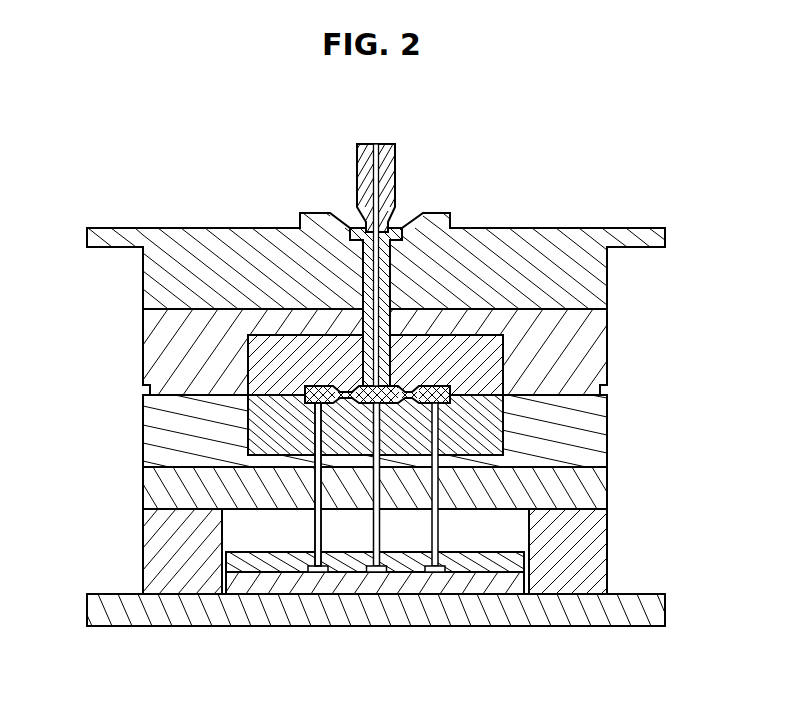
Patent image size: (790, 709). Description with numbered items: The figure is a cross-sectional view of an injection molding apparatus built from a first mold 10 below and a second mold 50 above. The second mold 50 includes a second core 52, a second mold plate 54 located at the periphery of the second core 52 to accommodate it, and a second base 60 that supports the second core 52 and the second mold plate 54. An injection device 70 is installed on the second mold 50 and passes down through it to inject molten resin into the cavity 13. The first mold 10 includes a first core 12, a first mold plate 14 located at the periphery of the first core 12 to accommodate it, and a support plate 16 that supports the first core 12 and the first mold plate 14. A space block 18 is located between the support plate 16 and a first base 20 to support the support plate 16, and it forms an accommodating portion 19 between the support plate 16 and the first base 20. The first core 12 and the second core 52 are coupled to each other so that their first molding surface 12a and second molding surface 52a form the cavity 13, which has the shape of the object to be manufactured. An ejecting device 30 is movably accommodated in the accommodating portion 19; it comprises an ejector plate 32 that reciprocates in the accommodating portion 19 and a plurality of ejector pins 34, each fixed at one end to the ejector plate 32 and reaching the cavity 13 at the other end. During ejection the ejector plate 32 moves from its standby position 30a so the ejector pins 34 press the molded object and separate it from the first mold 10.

The first mold 10 is at (374, 494).
The first core 12 is at (590, 472).
The first molding surface 12a is at (495, 441).
The cavity 13 is at (305, 388).
The first mold plate 14 is at (590, 455).
The support plate 16 is at (600, 500).
The space block 18 is at (600, 575).
The accommodating portion 19 is at (504, 515).
The first base 20 is at (568, 626).
The ejecting device 30 is at (394, 556).
The standby position 30a is at (318, 484).
The ejector plate 32 is at (452, 578).
The ejector pin 34 is at (411, 532).
The second mold 50 is at (371, 313).
The second core 52 is at (495, 358).
The second molding surface 52a is at (493, 379).
The second mold plate 54 is at (607, 328).
The second base 60 is at (607, 282).
The injection device 70 is at (346, 166).